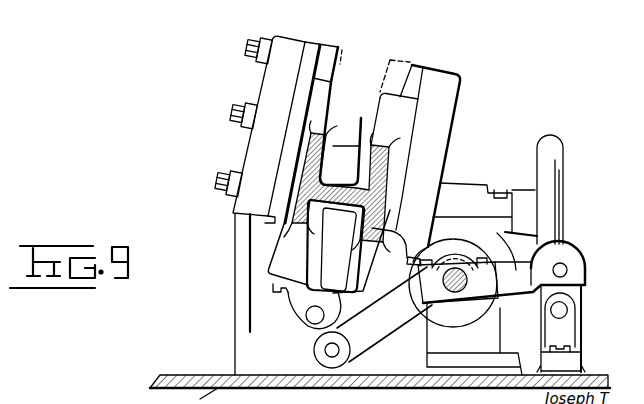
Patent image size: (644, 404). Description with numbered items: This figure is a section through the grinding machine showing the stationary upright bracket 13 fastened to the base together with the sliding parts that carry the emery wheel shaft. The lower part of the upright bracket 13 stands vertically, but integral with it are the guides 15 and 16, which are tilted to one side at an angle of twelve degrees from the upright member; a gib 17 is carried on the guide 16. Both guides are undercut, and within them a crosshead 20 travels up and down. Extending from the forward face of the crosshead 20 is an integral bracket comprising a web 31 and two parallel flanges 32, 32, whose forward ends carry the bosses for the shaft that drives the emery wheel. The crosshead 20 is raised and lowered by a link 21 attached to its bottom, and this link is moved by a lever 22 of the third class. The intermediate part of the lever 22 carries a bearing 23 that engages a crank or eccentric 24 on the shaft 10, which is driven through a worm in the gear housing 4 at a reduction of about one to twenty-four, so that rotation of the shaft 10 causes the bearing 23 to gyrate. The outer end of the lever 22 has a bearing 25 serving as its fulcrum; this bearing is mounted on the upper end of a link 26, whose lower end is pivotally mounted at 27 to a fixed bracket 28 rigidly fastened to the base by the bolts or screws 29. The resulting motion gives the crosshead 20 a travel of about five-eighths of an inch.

The gear housing 4 is at (456, 195).
The shaft 10 is at (453, 262).
The stationary upright bracket 13 is at (241, 246).
The guide 15 is at (442, 82).
The guide 16 is at (286, 47).
The gib 17 is at (311, 50).
The crosshead 20 is at (380, 127).
The link 21 is at (309, 335).
The lever 22 is at (402, 320).
The bearing 23 is at (425, 273).
The crank or eccentric 24 is at (457, 292).
The bearing 25 is at (581, 257).
The link 26 is at (584, 292).
The pivot 27 is at (569, 311).
The fixed bracket 28 is at (577, 330).
The bolts or screws 29 is at (552, 345).
The web 31 is at (340, 211).
The flanges 32 is at (304, 163).